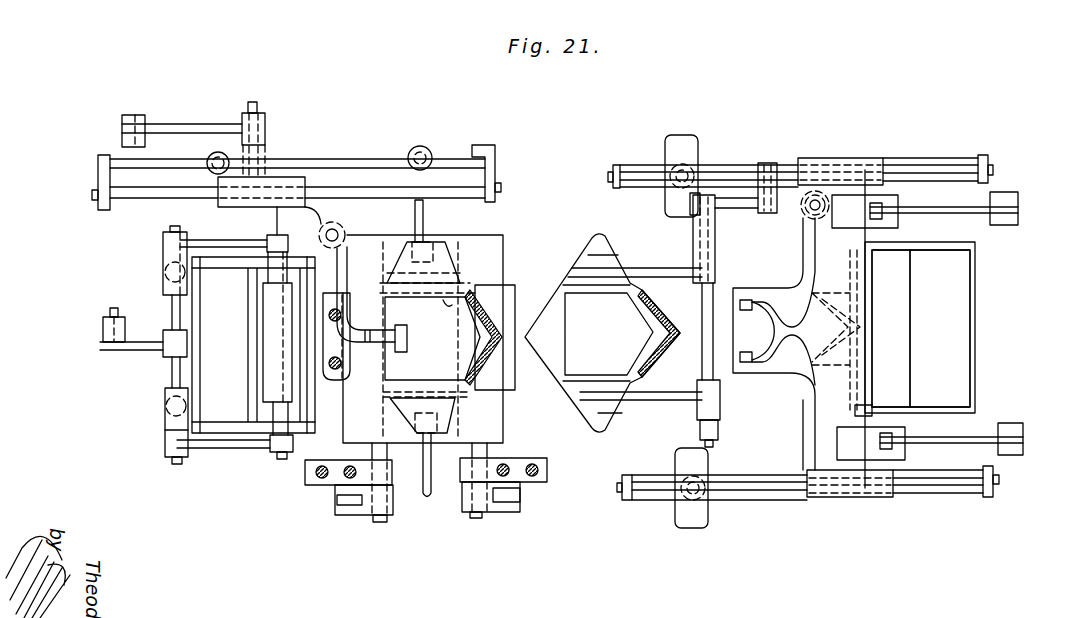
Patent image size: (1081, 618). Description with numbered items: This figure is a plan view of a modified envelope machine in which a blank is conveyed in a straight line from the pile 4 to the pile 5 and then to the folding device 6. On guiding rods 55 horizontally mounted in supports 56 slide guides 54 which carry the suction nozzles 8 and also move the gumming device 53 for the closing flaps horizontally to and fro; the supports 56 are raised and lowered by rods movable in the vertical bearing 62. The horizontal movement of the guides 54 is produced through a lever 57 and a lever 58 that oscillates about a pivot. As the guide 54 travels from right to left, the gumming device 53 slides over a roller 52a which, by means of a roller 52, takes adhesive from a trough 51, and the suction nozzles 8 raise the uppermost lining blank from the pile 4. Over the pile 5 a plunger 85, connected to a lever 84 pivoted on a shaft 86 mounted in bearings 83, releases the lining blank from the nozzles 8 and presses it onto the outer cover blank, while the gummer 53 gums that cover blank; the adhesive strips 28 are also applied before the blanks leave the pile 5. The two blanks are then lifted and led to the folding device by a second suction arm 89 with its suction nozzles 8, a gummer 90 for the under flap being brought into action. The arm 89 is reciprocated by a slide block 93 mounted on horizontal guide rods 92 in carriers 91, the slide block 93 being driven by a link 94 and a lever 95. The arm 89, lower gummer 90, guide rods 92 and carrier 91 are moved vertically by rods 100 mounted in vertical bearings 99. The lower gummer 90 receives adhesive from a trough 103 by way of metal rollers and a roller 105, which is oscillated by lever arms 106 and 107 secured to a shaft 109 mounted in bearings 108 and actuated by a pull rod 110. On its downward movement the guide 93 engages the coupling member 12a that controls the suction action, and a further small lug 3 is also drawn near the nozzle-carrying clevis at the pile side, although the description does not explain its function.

The carrier 91 is at (494, 178).
The slide block 93 is at (276, 190).
The link 94 is at (215, 131).
The lever 95 is at (147, 122).
The vertical bearing 99 is at (209, 161).
The rod 100 is at (230, 150).
The horizontal guide rod 92 is at (418, 189).
The second suction arm 89 is at (320, 228).
The coupling member 12a is at (342, 240).
The folding device 6 is at (447, 308).
The lower gummer 90 is at (338, 381).
The suction nozzle 8 is at (387, 295).
The trough 103 is at (233, 408).
The roller 105 is at (290, 365).
The lever arm 106 is at (188, 246).
The bearing 108 is at (168, 278).
The lever arm 107 is at (135, 346).
The shaft 109 is at (176, 370).
The pull rod 110 is at (108, 330).
The pile 5 is at (578, 350).
The adhesive strip 28 is at (650, 319).
The plunger 85 is at (600, 260).
The lever 84 is at (645, 273).
The shaft 86 is at (704, 361).
The bearing 83 is at (720, 420).
The vertical bearing 62 is at (689, 148).
The support 56 is at (739, 166).
The guide 54 is at (842, 166).
The guiding rod 55 is at (928, 169).
The lever 57 is at (951, 203).
The lever 58 is at (1014, 199).
The roller 52 is at (893, 305).
The roller 52a is at (972, 328).
The trough 51 is at (957, 357).
The gumming device 53 is at (838, 352).
The pile 4 is at (783, 370).
The lug 3 is at (745, 364).